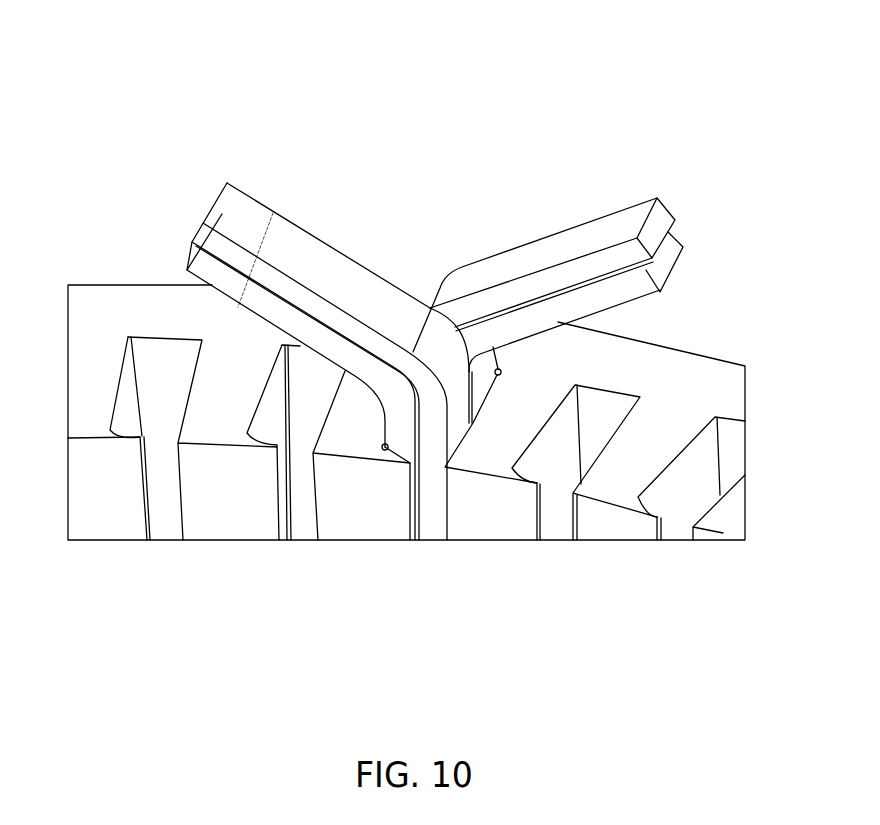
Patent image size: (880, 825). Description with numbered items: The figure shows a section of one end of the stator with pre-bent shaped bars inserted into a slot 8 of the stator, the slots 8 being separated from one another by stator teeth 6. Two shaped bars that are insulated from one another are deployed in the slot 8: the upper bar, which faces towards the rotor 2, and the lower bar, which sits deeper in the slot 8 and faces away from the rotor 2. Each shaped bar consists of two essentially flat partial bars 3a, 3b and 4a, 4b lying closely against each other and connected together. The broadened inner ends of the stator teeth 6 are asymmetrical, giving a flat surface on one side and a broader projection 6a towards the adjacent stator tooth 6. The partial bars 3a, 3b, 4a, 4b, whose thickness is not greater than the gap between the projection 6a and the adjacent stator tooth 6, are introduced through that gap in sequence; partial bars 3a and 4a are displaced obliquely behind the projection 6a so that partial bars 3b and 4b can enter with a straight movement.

The rotor 2 is at (115, 557).
The partial bar 3a is at (541, 252).
The partial bar 3b is at (670, 240).
The partial bar 4a is at (192, 240).
The partial bar 4b is at (283, 248).
The stator tooth 6 is at (229, 518).
The projection 6a is at (373, 452).
The slot 8 is at (597, 435).